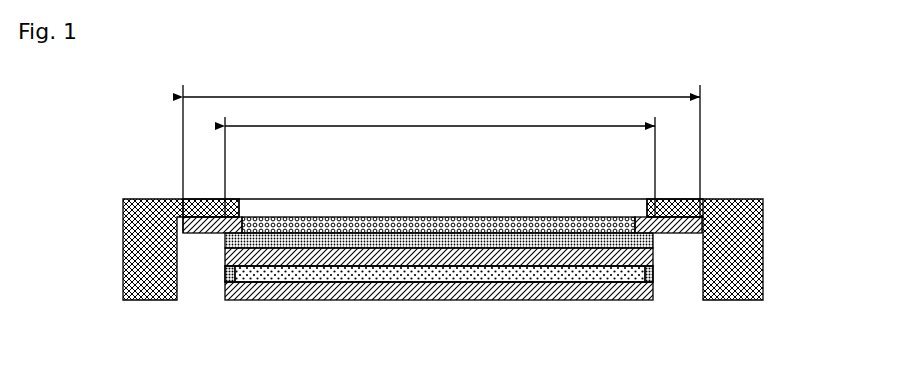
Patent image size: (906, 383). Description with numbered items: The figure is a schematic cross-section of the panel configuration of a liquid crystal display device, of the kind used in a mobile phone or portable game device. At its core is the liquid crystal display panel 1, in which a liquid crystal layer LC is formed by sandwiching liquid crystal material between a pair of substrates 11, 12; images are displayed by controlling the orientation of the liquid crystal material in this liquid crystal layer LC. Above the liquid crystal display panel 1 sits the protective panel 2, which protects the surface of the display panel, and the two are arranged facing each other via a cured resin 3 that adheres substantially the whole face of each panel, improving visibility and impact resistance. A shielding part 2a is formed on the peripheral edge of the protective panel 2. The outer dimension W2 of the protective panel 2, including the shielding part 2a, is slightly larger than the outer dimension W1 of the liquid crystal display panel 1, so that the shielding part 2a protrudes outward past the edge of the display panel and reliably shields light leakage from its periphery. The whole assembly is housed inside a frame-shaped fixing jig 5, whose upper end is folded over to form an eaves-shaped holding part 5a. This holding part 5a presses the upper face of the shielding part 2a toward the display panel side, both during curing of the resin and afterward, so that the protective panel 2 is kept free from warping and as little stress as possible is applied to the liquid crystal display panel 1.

The liquid crystal display panel 1 is at (344, 293).
The substrate 11 is at (223, 259).
The substrate 12 is at (223, 292).
The liquid crystal layer LC is at (327, 272).
The protective panel 2 is at (507, 216).
The shielding part 2a is at (213, 199).
The cured resin 3 is at (367, 227).
The fixing jig 5 is at (755, 219).
The holding part 5a is at (237, 199).
The outer dimension of the liquid crystal display panel W1 is at (440, 161).
The outer dimension of the protective panel W2 is at (441, 138).